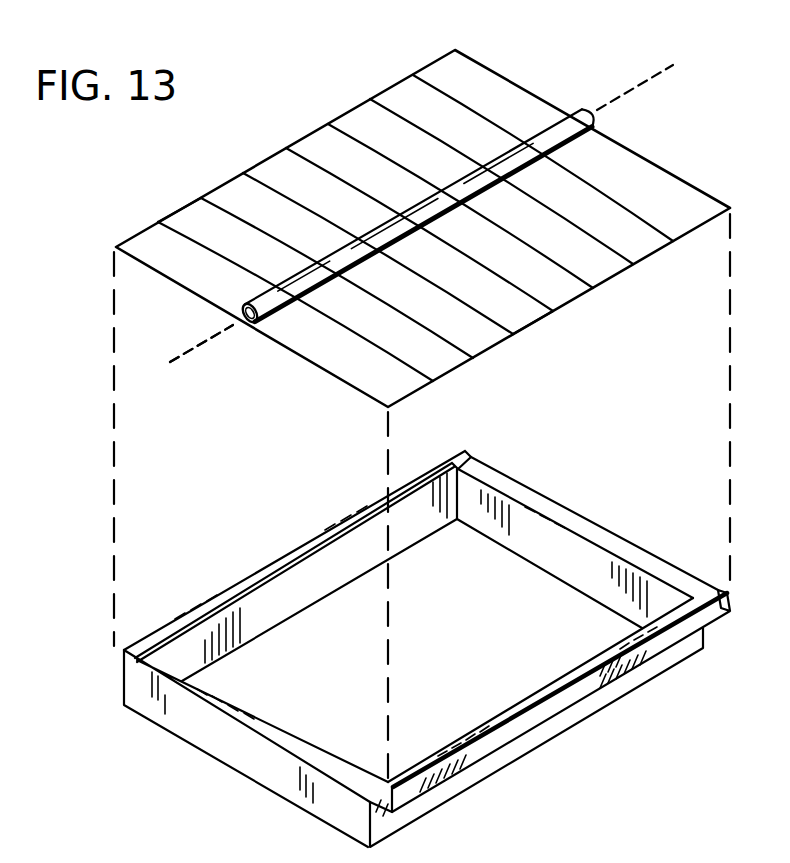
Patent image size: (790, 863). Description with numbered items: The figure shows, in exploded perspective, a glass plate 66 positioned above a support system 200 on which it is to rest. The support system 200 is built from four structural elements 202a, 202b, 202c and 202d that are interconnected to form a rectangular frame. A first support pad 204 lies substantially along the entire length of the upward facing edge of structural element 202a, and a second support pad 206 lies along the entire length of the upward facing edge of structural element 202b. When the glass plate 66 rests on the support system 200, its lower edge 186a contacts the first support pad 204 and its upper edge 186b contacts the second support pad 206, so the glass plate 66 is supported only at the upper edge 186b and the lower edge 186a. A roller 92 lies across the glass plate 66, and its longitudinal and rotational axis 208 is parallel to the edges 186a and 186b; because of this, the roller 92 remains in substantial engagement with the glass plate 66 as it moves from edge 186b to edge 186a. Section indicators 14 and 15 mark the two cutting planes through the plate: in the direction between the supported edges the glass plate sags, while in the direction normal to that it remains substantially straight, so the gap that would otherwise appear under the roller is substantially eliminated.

The glass plate 66 is at (515, 78).
The roller 92 is at (580, 107).
The section line 14- 14 is at (264, 352).
The section line 15- 15 is at (289, 112).
The lower edge 186a is at (532, 327).
The upper edge 186b is at (330, 125).
The longitudinal and rotational axis 208 is at (203, 343).
The support system 200 is at (421, 649).
The structural element 202a is at (552, 732).
The structural element 202b is at (323, 568).
The structural element 202c is at (218, 763).
The structural element 202d is at (577, 557).
The first support pad 204 is at (563, 678).
The second support pad 206 is at (282, 563).